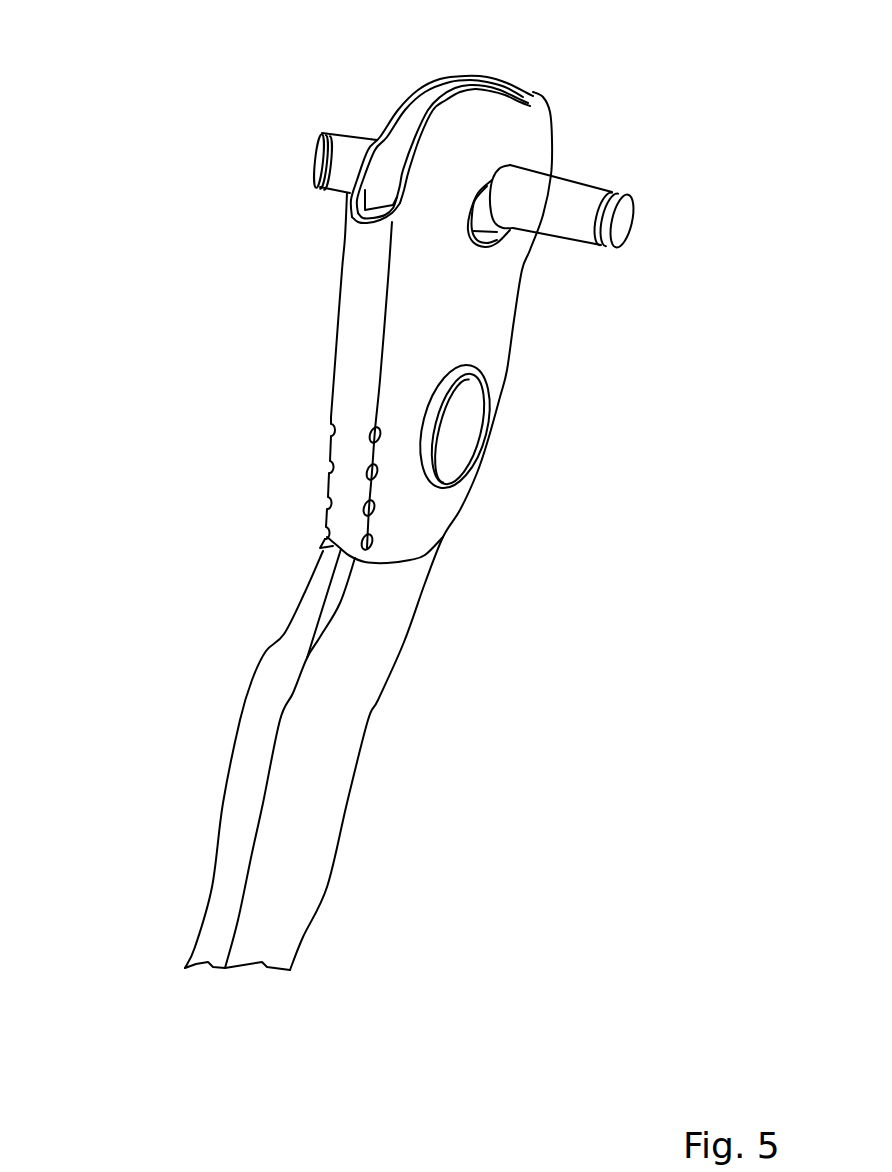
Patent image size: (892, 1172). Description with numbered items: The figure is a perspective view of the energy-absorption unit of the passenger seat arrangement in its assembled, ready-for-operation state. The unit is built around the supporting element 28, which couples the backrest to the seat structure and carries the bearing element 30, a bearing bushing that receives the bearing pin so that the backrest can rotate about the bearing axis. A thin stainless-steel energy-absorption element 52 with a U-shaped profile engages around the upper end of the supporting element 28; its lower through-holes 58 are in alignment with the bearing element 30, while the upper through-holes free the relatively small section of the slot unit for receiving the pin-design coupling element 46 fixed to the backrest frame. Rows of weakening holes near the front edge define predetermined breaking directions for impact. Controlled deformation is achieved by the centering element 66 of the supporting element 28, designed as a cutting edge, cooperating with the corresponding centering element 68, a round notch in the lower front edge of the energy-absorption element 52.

The supporting element 28 is at (298, 817).
The bearing element 30 is at (472, 417).
The coupling element 46 is at (542, 205).
The energy-absorption element 52 is at (467, 298).
The through-hole 58 is at (443, 447).
The centering element 66 is at (313, 607).
The centering element 68 is at (330, 541).